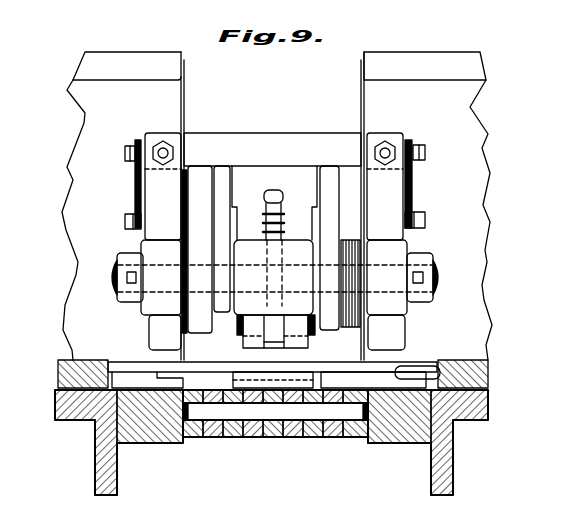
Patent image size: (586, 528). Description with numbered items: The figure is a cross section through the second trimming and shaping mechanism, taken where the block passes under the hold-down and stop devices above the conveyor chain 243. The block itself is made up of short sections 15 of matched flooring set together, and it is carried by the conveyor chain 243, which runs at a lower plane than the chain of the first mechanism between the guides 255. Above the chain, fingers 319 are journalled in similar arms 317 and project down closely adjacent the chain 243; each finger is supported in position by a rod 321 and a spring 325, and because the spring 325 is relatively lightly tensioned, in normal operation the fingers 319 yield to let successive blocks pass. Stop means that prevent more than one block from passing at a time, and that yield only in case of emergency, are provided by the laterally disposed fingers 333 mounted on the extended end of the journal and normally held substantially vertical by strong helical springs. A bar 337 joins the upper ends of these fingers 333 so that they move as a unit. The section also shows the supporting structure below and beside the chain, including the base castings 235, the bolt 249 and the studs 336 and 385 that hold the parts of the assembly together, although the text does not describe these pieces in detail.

The bar 337 is at (289, 146).
The stud bolt 336 is at (135, 184).
The stud bolt 385 is at (414, 186).
The arms 317 is at (274, 233).
The rod 321 is at (297, 189).
The spring 325 is at (272, 229).
The laterally disposed fingers 333 is at (153, 336).
The short sections of matched flooring 15 is at (179, 364).
The fingers 319 is at (297, 351).
The bolt 249 is at (396, 368).
The guides 255 is at (58, 374).
The base casting 235 is at (156, 443).
The conveyor chain 243 is at (280, 438).